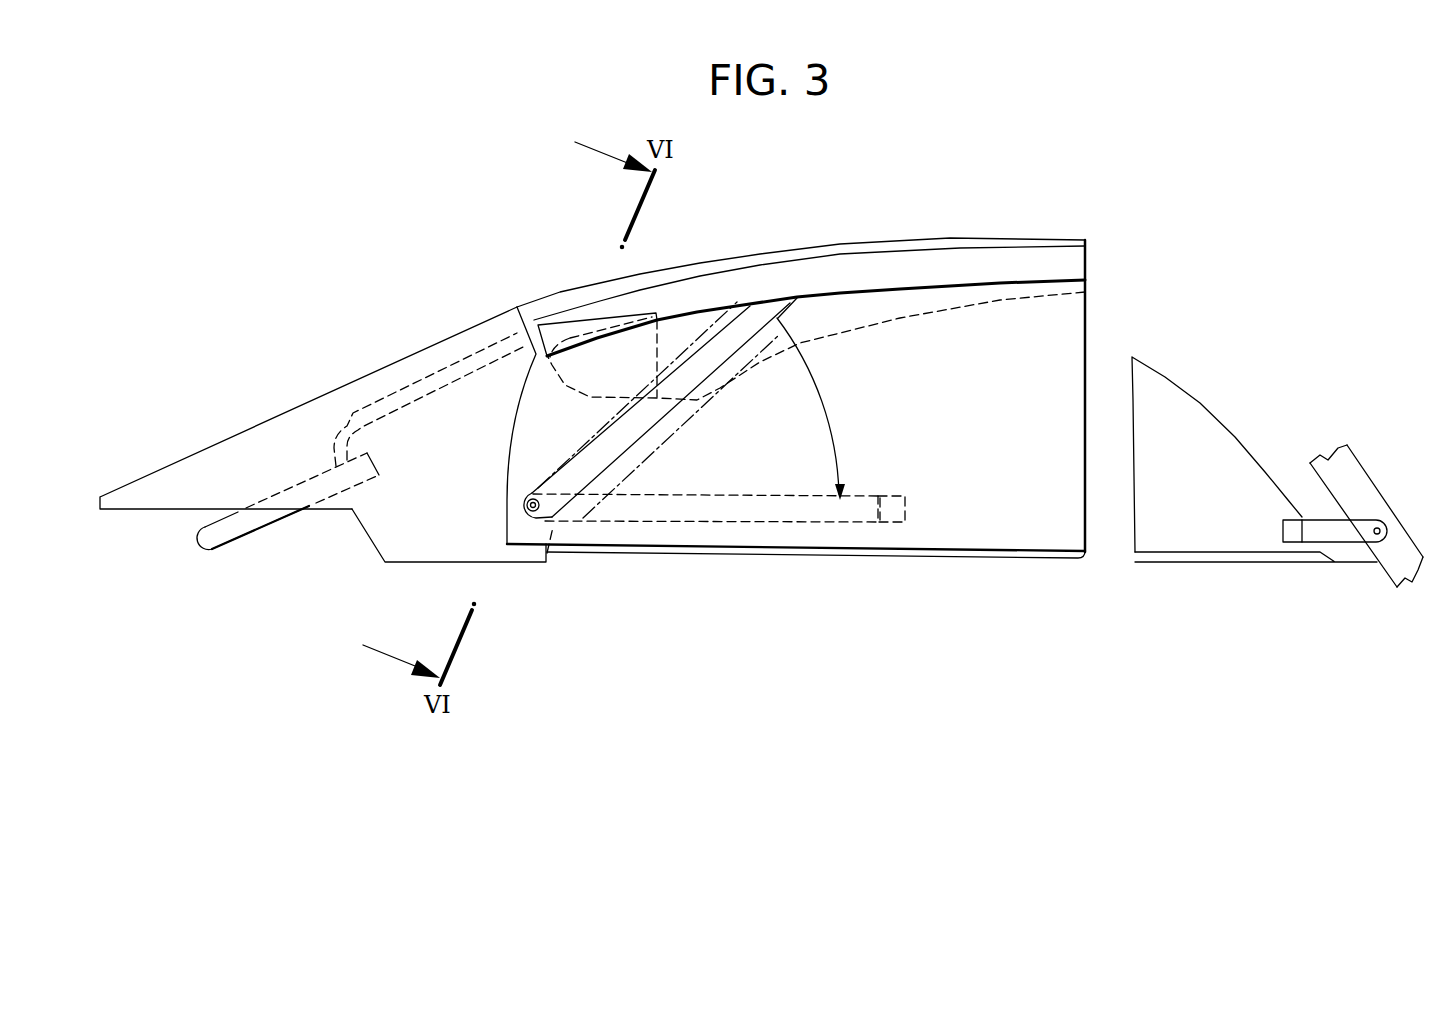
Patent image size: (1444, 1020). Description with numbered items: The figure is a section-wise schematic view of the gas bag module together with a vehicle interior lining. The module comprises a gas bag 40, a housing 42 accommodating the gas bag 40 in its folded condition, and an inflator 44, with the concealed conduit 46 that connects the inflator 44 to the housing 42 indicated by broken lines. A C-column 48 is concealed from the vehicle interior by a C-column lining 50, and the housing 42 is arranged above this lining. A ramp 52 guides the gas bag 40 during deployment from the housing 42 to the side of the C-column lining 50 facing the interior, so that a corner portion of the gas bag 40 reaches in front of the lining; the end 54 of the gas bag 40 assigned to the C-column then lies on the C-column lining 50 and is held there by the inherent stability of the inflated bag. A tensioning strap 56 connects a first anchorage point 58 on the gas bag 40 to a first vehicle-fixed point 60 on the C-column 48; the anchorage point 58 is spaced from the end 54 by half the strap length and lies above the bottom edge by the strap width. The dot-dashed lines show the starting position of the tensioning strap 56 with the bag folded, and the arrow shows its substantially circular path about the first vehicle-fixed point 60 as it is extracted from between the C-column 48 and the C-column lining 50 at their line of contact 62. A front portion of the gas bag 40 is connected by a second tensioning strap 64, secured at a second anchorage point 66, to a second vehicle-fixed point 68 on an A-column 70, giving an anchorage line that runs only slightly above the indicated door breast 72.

The gas bag 40 is at (993, 513).
The housing 42 is at (960, 262).
The inflator 44 is at (210, 548).
The conduit 46 is at (405, 384).
The C-column 48 is at (689, 338).
The C-column lining 50 is at (276, 438).
The ramp 52 is at (600, 360).
The end of the gas bag 54 is at (522, 440).
The tensioning strap 56 is at (682, 520).
The first anchorage point 58 is at (893, 520).
The first vehicle-fixed point 60 is at (526, 505).
The line of contact 62 is at (666, 436).
The second tensioning strap 64 is at (1352, 533).
The second anchorage point 66 is at (1293, 533).
The second vehicle-fixed point 68 is at (1388, 530).
The A-column 70 is at (1357, 487).
The door breast 72 is at (780, 558).